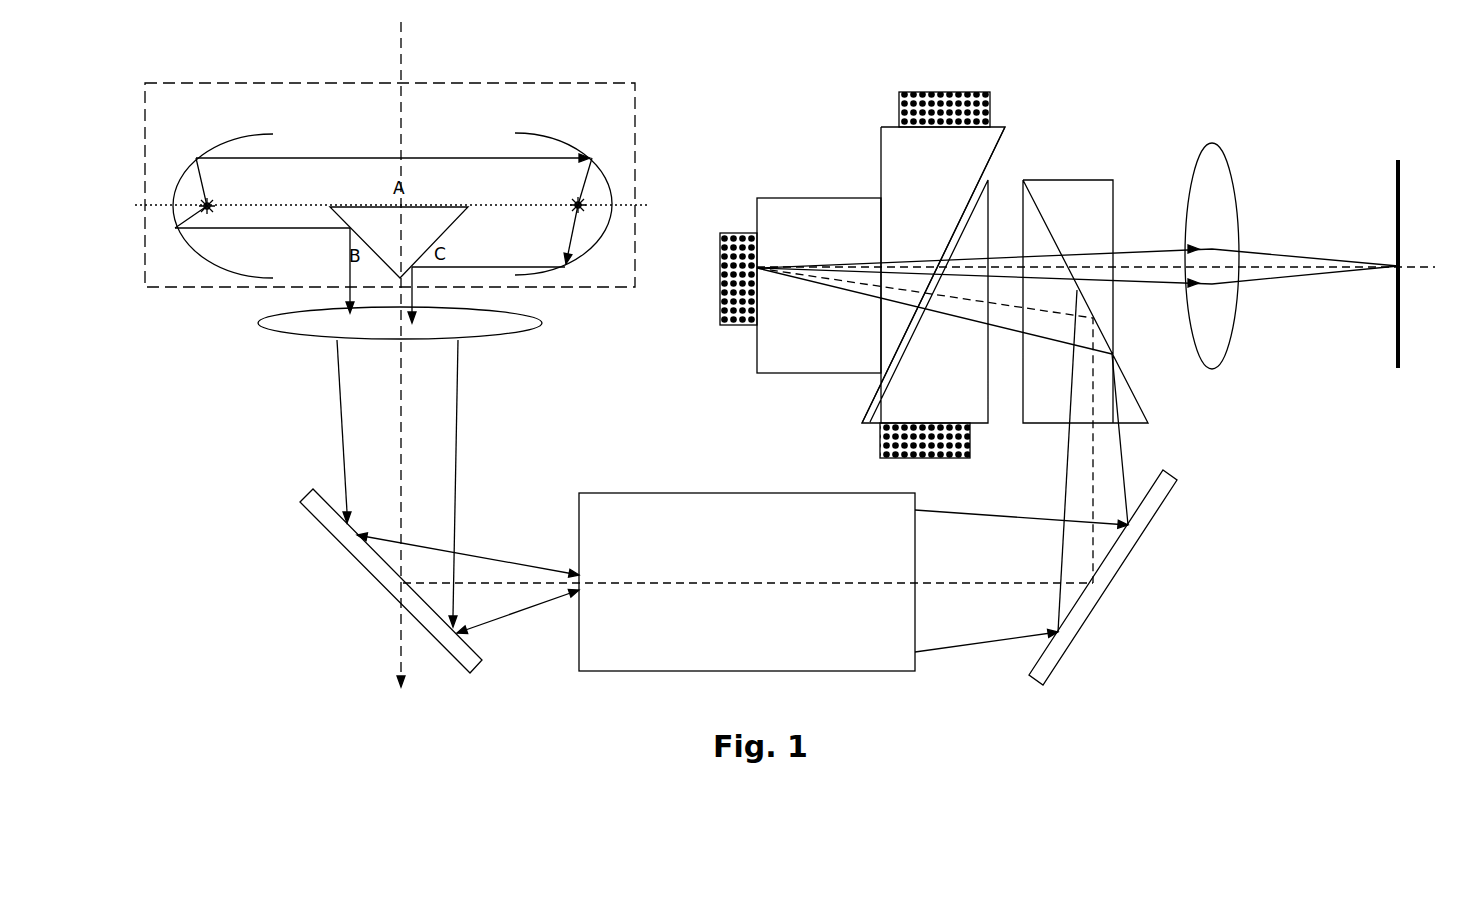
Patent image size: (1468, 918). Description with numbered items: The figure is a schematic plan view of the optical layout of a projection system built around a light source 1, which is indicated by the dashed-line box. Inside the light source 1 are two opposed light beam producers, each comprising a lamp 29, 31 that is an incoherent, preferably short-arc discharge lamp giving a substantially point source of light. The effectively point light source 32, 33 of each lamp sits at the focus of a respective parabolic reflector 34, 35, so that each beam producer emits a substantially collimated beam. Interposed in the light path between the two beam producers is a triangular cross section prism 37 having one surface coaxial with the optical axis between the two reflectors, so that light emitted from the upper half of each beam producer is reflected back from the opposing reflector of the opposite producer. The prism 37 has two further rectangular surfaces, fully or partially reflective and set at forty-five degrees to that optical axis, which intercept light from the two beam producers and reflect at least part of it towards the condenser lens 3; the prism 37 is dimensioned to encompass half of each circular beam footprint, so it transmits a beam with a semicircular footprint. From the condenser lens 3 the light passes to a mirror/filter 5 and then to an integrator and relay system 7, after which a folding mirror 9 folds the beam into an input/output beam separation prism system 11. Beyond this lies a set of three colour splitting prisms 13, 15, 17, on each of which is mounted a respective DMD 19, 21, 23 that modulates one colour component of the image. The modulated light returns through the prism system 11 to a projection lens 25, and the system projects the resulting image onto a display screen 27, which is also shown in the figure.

The light source 1 is at (351, 66).
The condenser lens 3 is at (490, 341).
The mirror/filter 5 is at (478, 668).
The integrator and relay system 7 is at (855, 671).
The folding mirror 9 is at (1065, 655).
The input/output beam separation prism system 11 is at (1076, 167).
The colour splitting prism 13 is at (880, 145).
The colour splitting prism 15 is at (803, 197).
The colour splitting prism 17 is at (866, 430).
The DMD 19 is at (990, 100).
The DMD 21 is at (722, 232).
The DMD 23 is at (950, 458).
The projection lens 25 is at (1230, 328).
The display screen 27 is at (1398, 340).
The lamp 29 is at (225, 131).
The lamp 31 is at (583, 141).
The point light source 32 is at (223, 194).
The point light source 33 is at (571, 223).
The parabolic reflector 34 is at (192, 254).
The parabolic reflector 35 is at (591, 262).
The triangular cross section prism 37 is at (459, 199).